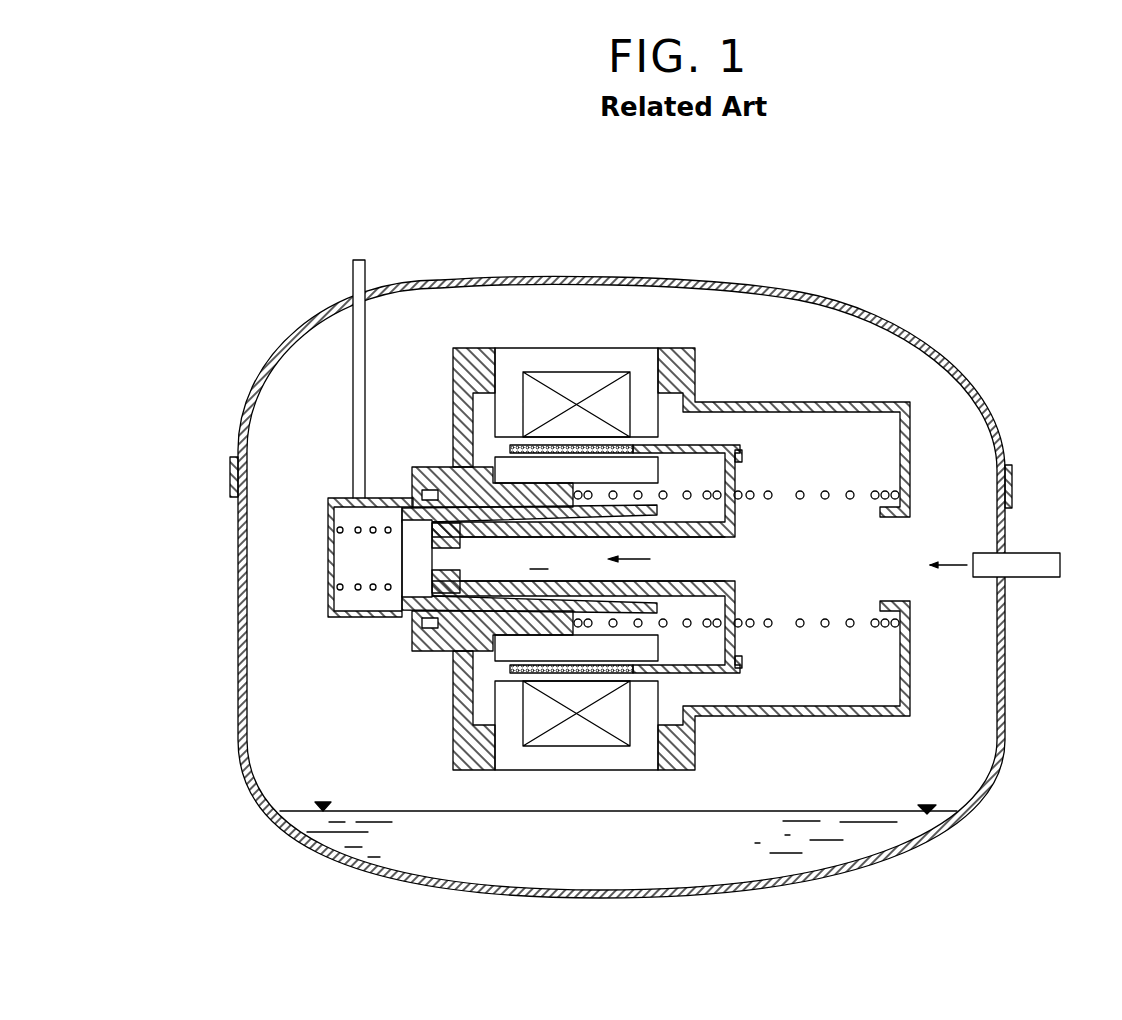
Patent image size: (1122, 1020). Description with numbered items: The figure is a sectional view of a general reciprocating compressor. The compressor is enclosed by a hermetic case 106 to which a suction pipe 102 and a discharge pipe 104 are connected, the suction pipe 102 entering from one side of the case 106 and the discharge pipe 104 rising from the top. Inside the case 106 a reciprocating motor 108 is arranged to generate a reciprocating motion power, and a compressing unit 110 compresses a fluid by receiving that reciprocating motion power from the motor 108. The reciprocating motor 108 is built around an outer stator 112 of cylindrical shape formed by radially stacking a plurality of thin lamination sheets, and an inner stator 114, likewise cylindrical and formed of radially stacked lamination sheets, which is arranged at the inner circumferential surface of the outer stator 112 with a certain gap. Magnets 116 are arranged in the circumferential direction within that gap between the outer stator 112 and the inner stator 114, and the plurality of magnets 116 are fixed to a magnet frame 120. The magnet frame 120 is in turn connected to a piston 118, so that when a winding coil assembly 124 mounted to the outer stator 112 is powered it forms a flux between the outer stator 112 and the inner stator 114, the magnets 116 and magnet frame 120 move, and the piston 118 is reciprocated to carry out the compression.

The suction pipe 102 is at (1033, 563).
The discharge pipe 104 is at (352, 278).
The hermetic case 106 is at (440, 285).
The reciprocating motor 108 is at (667, 345).
The compressing unit 110 is at (405, 629).
The outer stator 112 is at (560, 362).
The inner stator 114 is at (594, 473).
The magnets 116 is at (612, 448).
The piston 118 is at (707, 540).
The magnet frame 120 is at (707, 440).
The winding coil assembly 124 is at (538, 395).